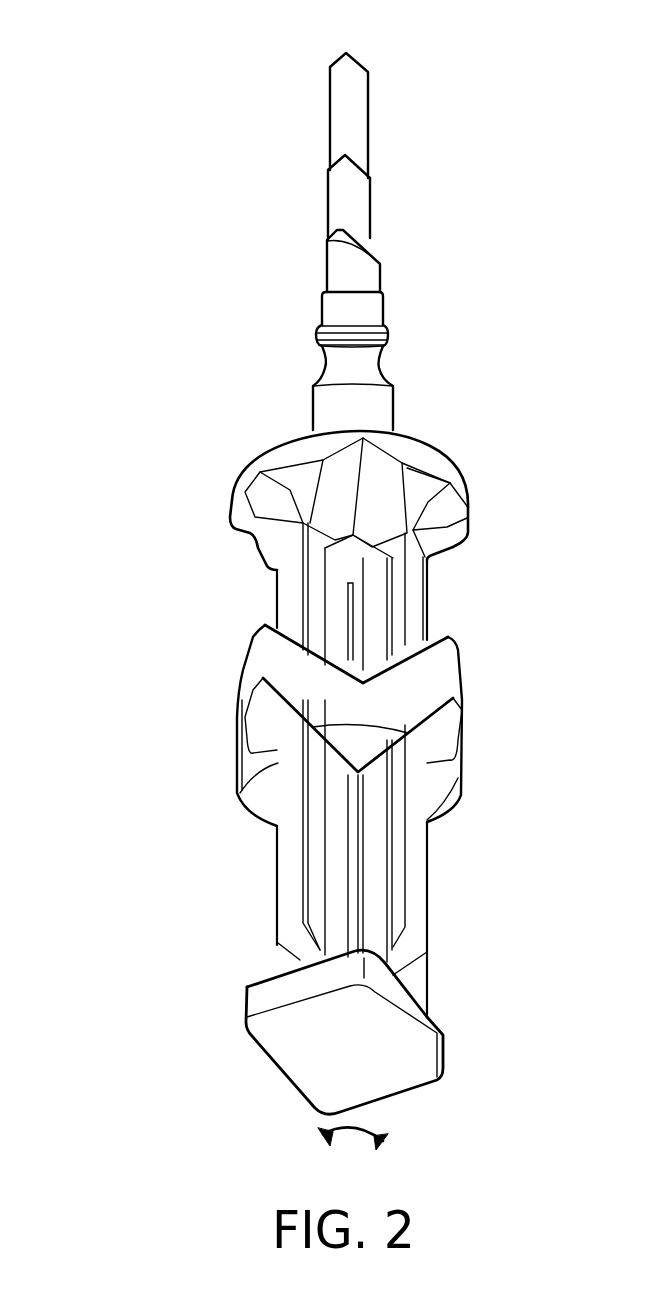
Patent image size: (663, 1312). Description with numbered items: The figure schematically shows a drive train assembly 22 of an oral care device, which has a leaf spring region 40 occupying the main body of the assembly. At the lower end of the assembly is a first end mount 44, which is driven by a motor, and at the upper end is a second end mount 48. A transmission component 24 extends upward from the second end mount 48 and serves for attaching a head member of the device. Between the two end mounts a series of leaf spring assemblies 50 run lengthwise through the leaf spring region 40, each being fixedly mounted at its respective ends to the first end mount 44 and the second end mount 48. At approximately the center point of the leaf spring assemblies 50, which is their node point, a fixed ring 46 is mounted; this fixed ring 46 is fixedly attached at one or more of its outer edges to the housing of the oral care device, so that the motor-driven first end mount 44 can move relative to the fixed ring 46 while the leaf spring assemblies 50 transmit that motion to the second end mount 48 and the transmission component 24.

The drive train assembly 22 is at (113, 90).
The transmission component 24 is at (330, 122).
The leaf spring region 40 is at (493, 522).
The first end mount 44 is at (245, 1005).
The fixed ring 46 is at (240, 686).
The second end mount 48 is at (240, 485).
The leaf spring assemblies 50 is at (297, 595).